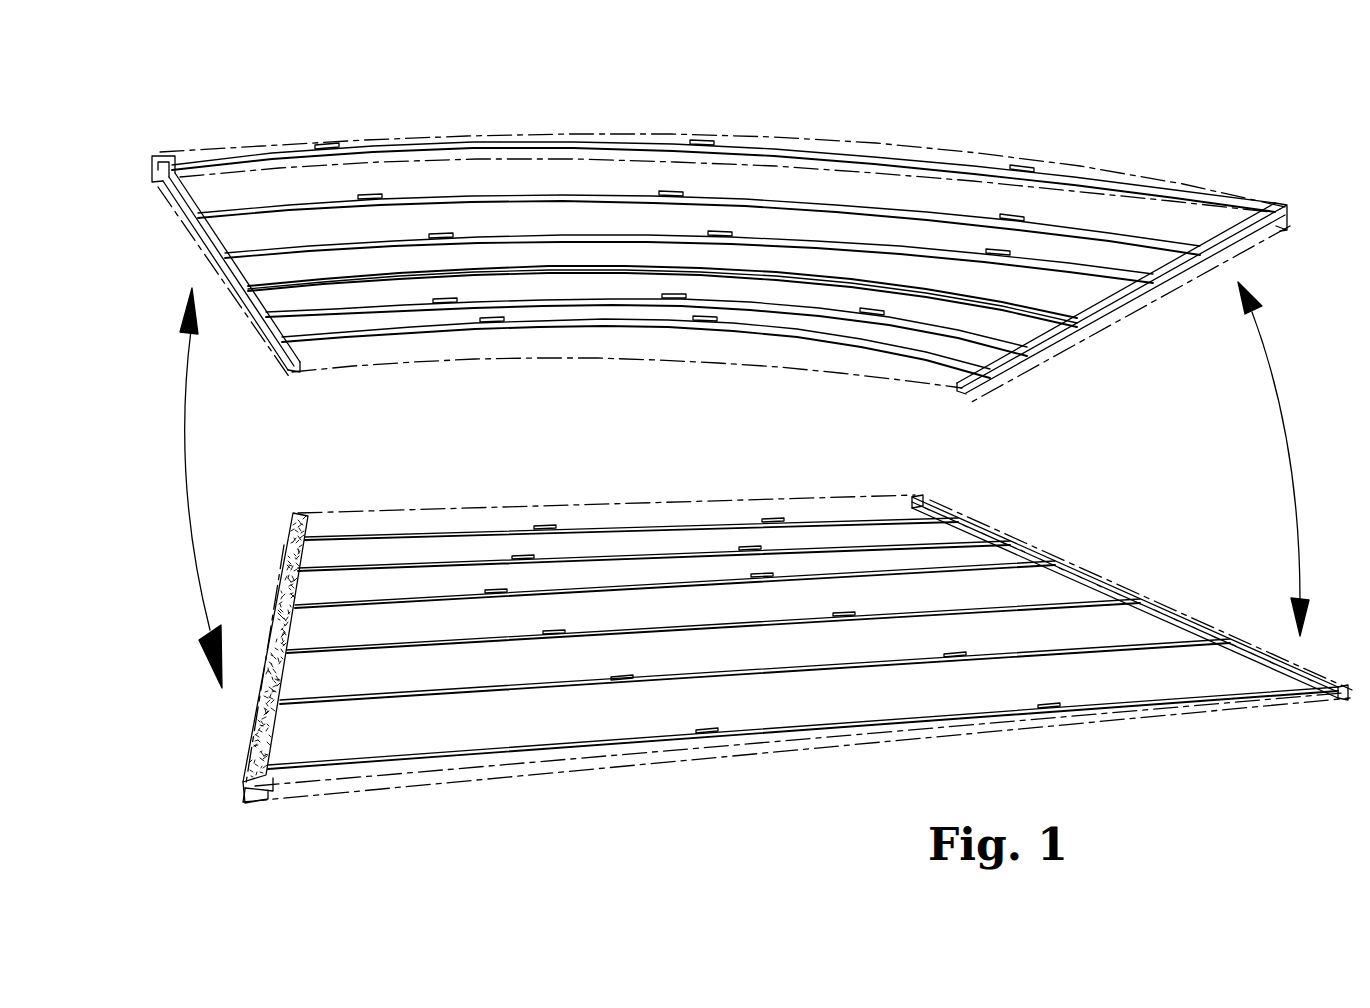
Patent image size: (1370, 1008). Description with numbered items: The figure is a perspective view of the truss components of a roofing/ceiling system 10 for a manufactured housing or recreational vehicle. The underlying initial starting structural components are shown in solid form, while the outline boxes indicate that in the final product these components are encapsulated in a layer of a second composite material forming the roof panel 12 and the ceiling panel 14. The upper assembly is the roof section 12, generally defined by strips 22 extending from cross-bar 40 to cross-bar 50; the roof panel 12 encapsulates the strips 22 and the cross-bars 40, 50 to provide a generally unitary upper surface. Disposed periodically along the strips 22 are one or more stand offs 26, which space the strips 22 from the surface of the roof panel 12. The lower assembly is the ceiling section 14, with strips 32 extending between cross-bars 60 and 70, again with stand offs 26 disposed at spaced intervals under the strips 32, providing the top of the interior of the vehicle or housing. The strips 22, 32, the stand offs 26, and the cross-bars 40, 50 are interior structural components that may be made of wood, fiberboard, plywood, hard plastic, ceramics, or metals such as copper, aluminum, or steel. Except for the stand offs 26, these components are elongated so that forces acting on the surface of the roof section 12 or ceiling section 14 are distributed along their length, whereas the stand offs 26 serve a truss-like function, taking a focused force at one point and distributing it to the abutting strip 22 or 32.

The roofing/ceiling system 10 is at (1243, 143).
The roof panel 12 is at (168, 152).
The ceiling panel 14 is at (502, 777).
The strips 22 is at (900, 160).
The stand offs 26 is at (736, 193).
The strips 32 is at (596, 558).
The cross-bar 40 is at (205, 222).
The cross-bar 50 is at (1137, 293).
The cross-bar 60 is at (267, 728).
The cross-bar 70 is at (1188, 617).